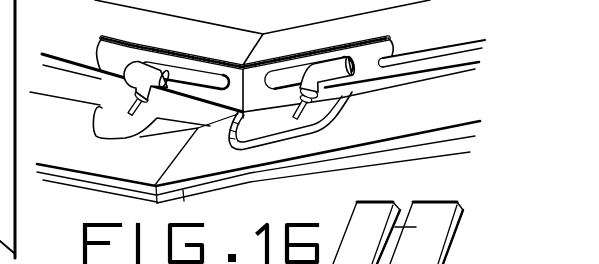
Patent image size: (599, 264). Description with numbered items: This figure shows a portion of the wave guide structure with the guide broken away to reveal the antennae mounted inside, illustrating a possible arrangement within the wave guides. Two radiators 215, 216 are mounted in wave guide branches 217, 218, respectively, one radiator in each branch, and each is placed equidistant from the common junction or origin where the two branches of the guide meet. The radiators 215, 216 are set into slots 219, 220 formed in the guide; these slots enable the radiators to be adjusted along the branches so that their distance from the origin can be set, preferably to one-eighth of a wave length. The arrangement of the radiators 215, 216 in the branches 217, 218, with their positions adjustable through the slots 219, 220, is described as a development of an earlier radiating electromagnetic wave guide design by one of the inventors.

The radiator 215 is at (133, 111).
The radiator 216 is at (291, 115).
The wave guide branch 217 is at (132, 123).
The wave guide branch 218 is at (309, 121).
The slot 219 is at (189, 68).
The slot 220 is at (293, 73).